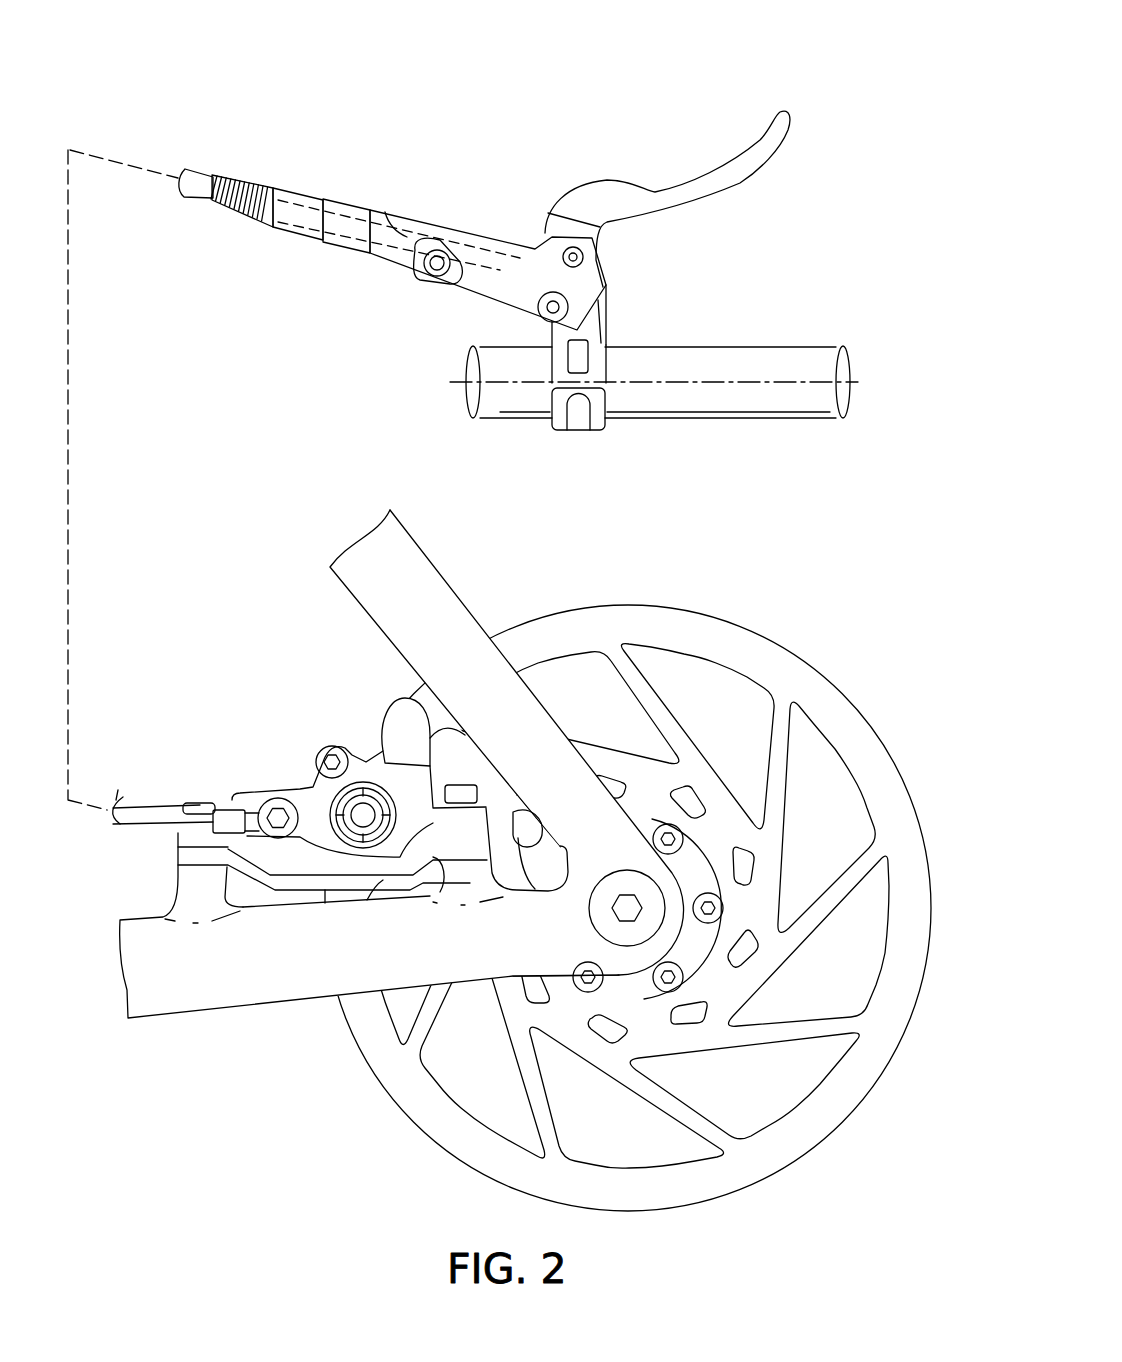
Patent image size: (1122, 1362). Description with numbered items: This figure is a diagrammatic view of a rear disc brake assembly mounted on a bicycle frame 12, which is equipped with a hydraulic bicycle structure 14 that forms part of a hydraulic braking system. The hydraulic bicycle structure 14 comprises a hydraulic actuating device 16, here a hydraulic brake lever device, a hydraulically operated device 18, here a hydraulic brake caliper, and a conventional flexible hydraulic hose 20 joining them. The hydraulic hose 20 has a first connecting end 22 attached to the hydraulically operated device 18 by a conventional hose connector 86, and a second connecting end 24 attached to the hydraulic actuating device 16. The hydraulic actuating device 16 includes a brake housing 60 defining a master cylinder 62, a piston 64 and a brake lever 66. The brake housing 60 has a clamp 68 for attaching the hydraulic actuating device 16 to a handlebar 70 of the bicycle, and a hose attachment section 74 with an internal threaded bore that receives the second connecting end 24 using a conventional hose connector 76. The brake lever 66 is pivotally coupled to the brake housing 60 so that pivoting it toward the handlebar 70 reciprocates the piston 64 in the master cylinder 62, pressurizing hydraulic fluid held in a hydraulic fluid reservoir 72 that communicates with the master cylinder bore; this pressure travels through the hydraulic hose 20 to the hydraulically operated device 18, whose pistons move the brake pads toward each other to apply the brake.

The bicycle frame 12 is at (443, 557).
The hydraulic bicycle structure 14 is at (514, 242).
The hydraulic actuating device 16 is at (480, 297).
The hydraulically operated device 18 is at (369, 857).
The hydraulic hose 20 is at (142, 833).
The first connecting end 22 is at (207, 802).
The second connecting end 24 is at (192, 200).
The brake housing 60 is at (394, 284).
The master cylinder 62 is at (395, 212).
The piston 64 is at (447, 282).
The brake lever 66 is at (712, 200).
The clamp 68 is at (596, 416).
The handlebar 70 is at (700, 346).
The hydraulic fluid reservoir 72 is at (490, 285).
The hose attachment section 74 is at (330, 243).
The hose connector 76 is at (288, 193).
The hose connector 86 is at (278, 800).